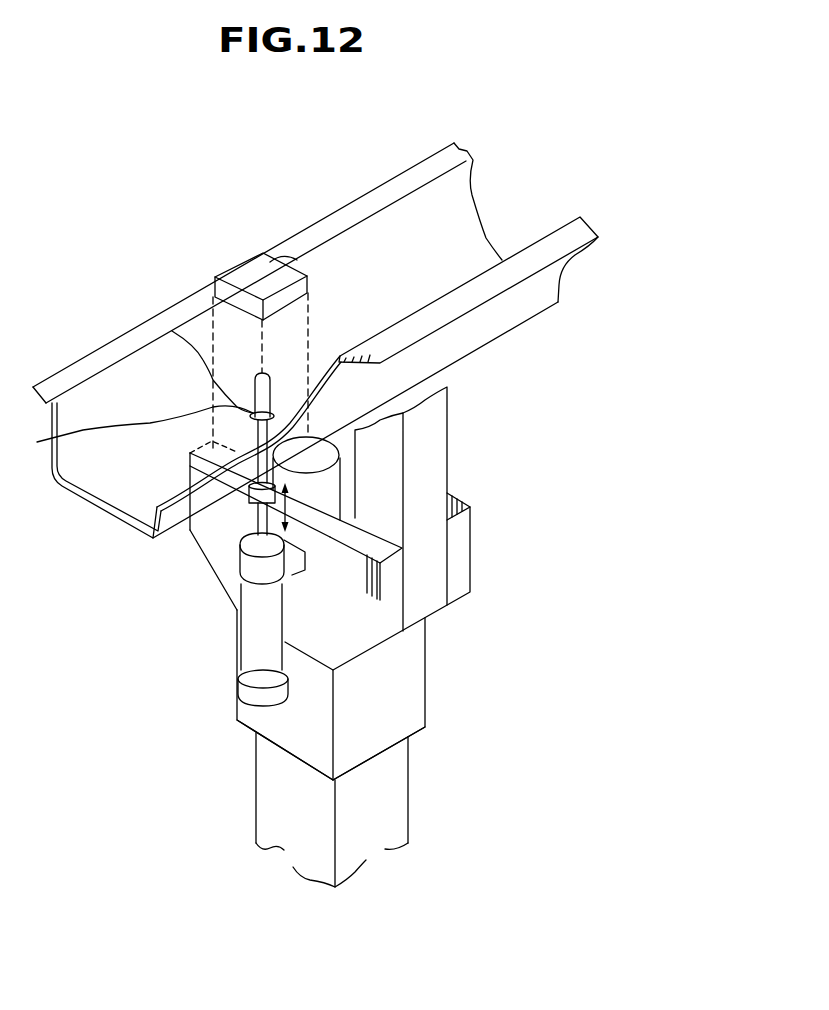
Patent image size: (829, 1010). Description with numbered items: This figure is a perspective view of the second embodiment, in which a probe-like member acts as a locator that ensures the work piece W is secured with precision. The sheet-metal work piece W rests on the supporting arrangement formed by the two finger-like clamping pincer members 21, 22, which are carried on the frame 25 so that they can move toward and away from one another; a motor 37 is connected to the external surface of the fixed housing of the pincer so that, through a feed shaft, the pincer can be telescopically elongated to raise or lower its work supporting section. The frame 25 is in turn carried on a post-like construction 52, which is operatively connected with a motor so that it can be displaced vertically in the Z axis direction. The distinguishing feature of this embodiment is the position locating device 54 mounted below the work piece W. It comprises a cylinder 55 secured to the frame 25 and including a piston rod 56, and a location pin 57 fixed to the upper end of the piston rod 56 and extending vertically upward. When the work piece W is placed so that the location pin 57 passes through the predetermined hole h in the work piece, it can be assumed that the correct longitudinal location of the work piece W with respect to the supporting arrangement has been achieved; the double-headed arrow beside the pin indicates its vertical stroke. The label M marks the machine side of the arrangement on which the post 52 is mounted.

The work piece W is at (339, 200).
The hole h is at (37, 442).
The clamping pincer member 22 is at (230, 262).
The location pin 57 is at (250, 384).
The piston rod 56 is at (238, 535).
The position locating device 54 is at (226, 596).
The cylinder 55 is at (247, 630).
The motor 37 is at (328, 487).
The clamping pincer member 21 is at (462, 415).
The frame 25 is at (480, 573).
The machine base M is at (420, 780).
The post-like construction 52 is at (395, 803).